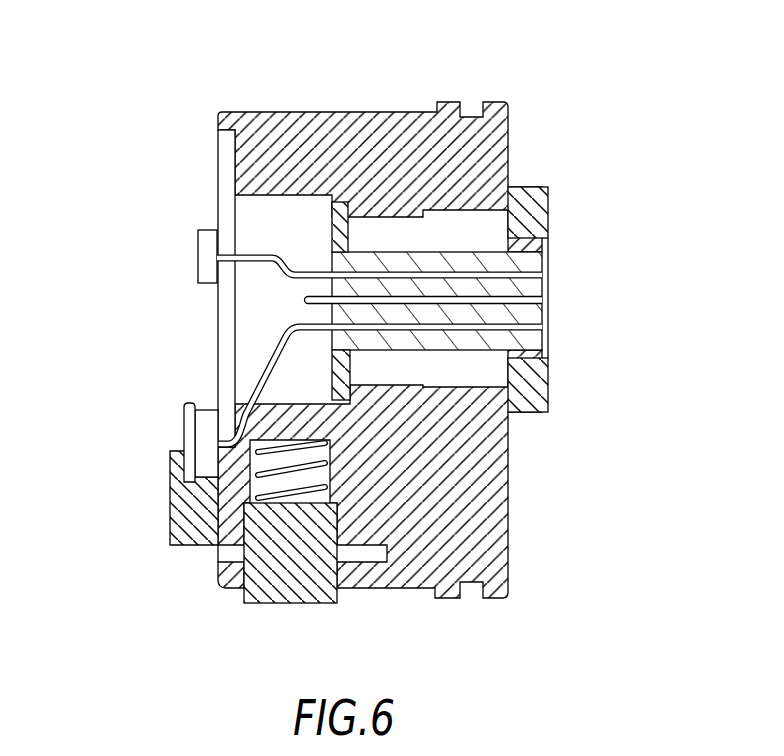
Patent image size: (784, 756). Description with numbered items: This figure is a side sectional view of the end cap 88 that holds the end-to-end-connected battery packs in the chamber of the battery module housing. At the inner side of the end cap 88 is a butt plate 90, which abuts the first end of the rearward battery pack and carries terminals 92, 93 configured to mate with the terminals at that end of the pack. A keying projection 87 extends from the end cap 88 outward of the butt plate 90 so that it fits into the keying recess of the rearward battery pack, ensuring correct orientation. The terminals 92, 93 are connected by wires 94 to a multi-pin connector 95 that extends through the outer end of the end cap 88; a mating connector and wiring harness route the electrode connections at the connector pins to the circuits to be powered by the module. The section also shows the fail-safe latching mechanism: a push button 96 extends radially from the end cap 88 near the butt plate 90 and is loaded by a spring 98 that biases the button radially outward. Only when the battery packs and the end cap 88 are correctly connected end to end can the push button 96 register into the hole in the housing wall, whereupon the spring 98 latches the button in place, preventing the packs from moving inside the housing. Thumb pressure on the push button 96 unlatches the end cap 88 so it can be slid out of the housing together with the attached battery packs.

The keying projection 87 is at (170, 527).
The end cap 88 is at (494, 98).
The butt plate 90 is at (218, 183).
The terminal 92 is at (198, 258).
The terminal 93 is at (183, 442).
The wires 94 is at (253, 395).
The multi-pin connector 95 is at (540, 318).
The push button 96 is at (292, 605).
The spring 98 is at (323, 480).